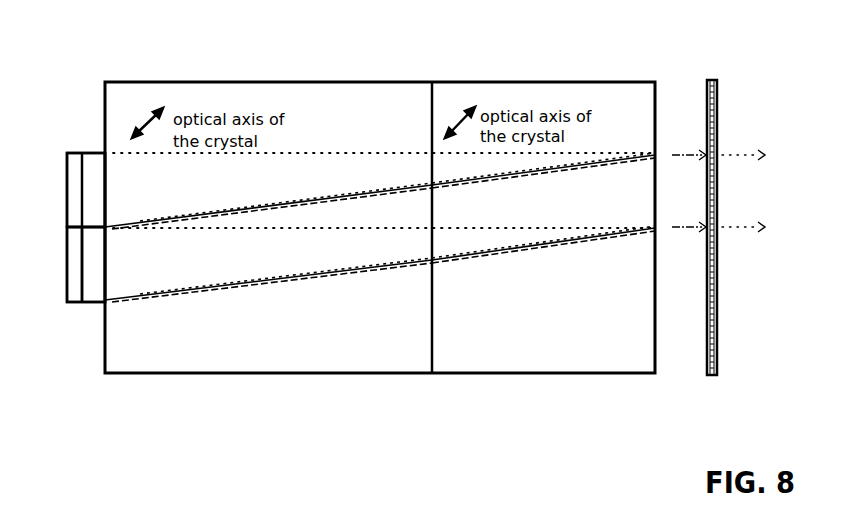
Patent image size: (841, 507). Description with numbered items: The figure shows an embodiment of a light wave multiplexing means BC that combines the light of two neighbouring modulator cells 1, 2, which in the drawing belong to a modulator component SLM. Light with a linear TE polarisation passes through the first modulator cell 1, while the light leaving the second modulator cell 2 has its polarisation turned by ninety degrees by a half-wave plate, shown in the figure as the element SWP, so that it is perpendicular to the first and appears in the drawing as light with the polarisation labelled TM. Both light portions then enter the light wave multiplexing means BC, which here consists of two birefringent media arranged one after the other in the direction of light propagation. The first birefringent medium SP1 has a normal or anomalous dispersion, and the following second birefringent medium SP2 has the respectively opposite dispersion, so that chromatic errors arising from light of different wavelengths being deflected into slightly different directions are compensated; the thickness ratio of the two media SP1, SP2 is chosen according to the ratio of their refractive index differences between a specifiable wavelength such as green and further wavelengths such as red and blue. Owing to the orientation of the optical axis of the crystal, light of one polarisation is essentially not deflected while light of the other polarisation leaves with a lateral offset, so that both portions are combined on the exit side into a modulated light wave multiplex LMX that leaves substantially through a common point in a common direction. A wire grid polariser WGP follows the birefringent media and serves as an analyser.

The first modulator cell 1 is at (72, 182).
The second modulator cell 2 is at (72, 278).
The spatial light modulator SLM is at (71, 367).
The structured wave plate (half-wave plate λ/2) SWP is at (88, 248).
The light wave multiplexing means BC is at (655, 68).
The first birefringent medium SP1 is at (362, 357).
The second birefringent medium SP2 is at (622, 287).
The TE polarisation TE is at (352, 153).
The TM polarised light beam TM is at (385, 268).
The polarisation means (wire grid polariser) WGP is at (717, 363).
The modulated light wave multiplex LMX is at (740, 228).